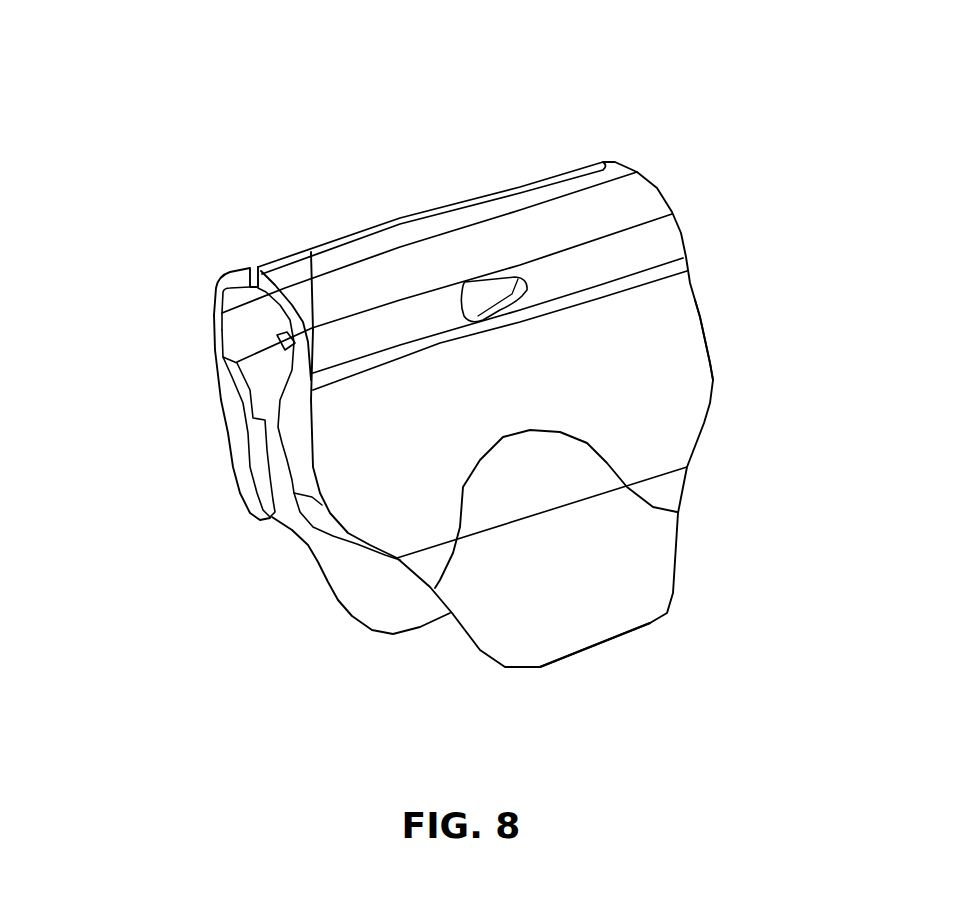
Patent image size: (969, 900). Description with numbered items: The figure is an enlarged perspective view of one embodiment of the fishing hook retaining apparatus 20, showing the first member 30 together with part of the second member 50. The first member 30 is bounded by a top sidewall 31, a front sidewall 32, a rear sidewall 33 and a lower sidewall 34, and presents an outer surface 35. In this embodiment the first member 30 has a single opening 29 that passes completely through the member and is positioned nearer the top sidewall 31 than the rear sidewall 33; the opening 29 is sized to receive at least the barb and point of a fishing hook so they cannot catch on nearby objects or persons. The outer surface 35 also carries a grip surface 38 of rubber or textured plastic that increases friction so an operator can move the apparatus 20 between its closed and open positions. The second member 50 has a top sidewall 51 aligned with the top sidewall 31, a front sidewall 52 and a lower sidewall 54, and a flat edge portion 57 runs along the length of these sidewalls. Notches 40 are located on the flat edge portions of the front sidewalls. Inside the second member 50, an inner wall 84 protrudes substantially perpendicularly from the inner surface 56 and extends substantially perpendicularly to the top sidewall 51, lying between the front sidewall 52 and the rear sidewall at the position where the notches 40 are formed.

The fishing hook retaining apparatus 20 is at (330, 180).
The opening 29 is at (498, 292).
The first member 30 is at (700, 260).
The top sidewall 31 is at (567, 185).
The front sidewall 32 is at (308, 492).
The rear sidewall 33 is at (710, 353).
The lower sidewall 34 is at (593, 643).
The outer surface 35 is at (548, 363).
The grip surface 38 is at (623, 557).
The notch 40 is at (290, 485).
The second member 50 is at (241, 533).
The top sidewall 51 is at (297, 252).
The front sidewall 52 is at (237, 427).
The lower sidewall 54 is at (423, 625).
The inner surface 56 is at (270, 383).
The flat edge portion 57 is at (244, 390).
The inner wall 84 is at (313, 333).